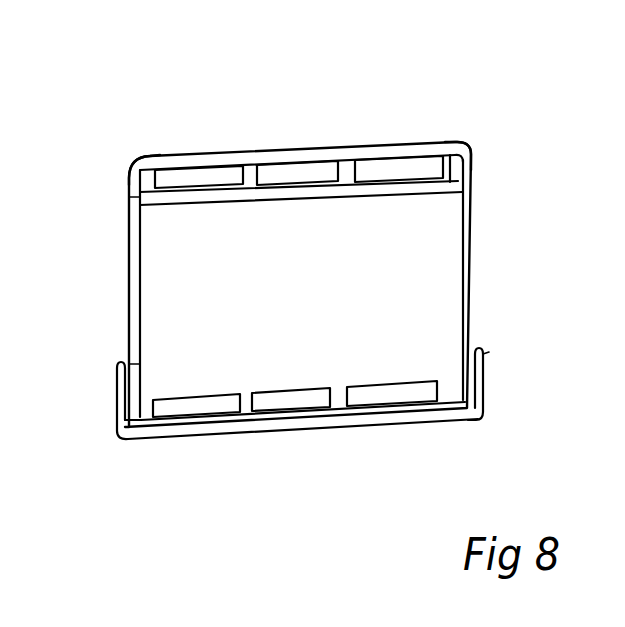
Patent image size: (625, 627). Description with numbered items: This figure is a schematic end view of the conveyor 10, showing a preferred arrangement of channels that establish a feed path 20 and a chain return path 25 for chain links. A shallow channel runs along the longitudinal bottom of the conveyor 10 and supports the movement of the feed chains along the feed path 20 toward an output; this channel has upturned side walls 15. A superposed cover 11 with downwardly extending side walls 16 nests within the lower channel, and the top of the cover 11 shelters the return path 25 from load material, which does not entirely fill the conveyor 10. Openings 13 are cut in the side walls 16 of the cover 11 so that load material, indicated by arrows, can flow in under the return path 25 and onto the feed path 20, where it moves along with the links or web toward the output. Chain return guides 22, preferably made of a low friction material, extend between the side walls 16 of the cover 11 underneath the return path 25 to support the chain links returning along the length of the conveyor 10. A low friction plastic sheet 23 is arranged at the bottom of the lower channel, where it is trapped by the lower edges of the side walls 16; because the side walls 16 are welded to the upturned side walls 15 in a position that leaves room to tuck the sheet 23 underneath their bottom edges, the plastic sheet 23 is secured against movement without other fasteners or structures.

The conveyor 10 is at (438, 84).
The cover 11 is at (320, 147).
The openings 13 is at (203, 300).
The upturned side walls 15 is at (115, 396).
The side walls 16 is at (129, 197).
The feed path 20 is at (272, 408).
The chain return guides 22 is at (467, 160).
The low friction plastic sheet 23 is at (340, 412).
The chain return path 25 is at (287, 170).